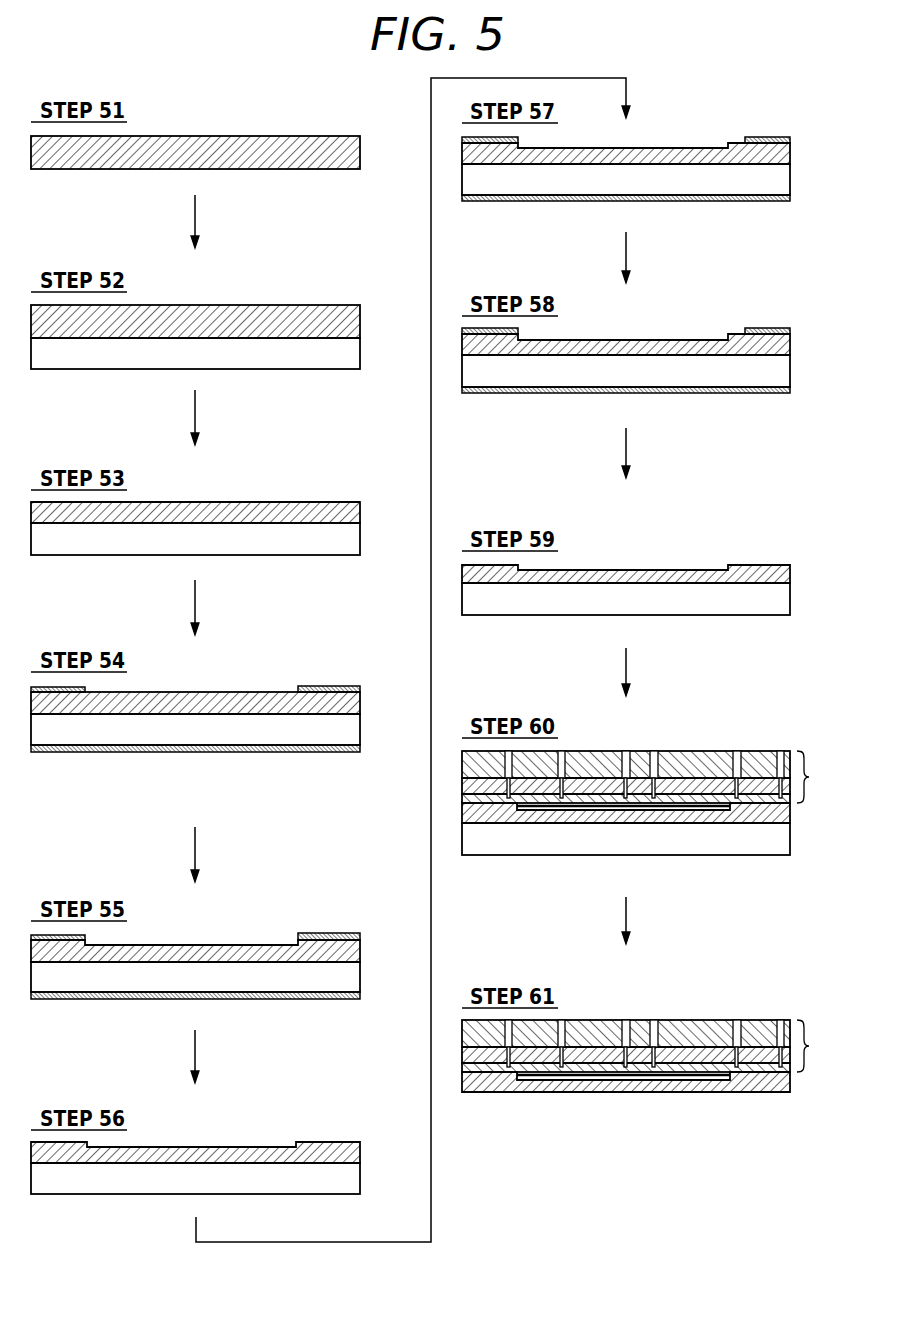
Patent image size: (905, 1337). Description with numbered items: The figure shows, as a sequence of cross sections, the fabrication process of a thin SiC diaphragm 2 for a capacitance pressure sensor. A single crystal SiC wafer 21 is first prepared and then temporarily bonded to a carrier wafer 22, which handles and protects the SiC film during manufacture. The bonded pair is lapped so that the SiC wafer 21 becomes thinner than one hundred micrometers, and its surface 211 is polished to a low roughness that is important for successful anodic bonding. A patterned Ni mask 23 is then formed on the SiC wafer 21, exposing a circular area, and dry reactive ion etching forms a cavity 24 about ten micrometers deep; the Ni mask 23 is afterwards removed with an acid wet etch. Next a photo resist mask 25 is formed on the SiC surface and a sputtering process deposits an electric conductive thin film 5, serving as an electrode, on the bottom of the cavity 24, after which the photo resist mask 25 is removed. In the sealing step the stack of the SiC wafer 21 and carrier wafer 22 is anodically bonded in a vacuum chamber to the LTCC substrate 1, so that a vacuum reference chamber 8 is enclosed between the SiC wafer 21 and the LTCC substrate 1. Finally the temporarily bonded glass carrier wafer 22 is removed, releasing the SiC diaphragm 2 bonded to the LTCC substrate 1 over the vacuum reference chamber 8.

The LTCC substrate 1 is at (641, 911).
The SiC diaphragm 2 is at (790, 1083).
The electric conductive thin film 5 is at (604, 569).
The vacuum reference chamber 8 is at (575, 812).
The SiC wafer 21 is at (360, 154).
The carrier wafer 22 is at (354, 353).
The Ni mask 23 is at (360, 690).
The cavity 24 is at (250, 942).
The photo resist mask 25 is at (790, 140).
The surface of SiC wafer 211 is at (297, 501).